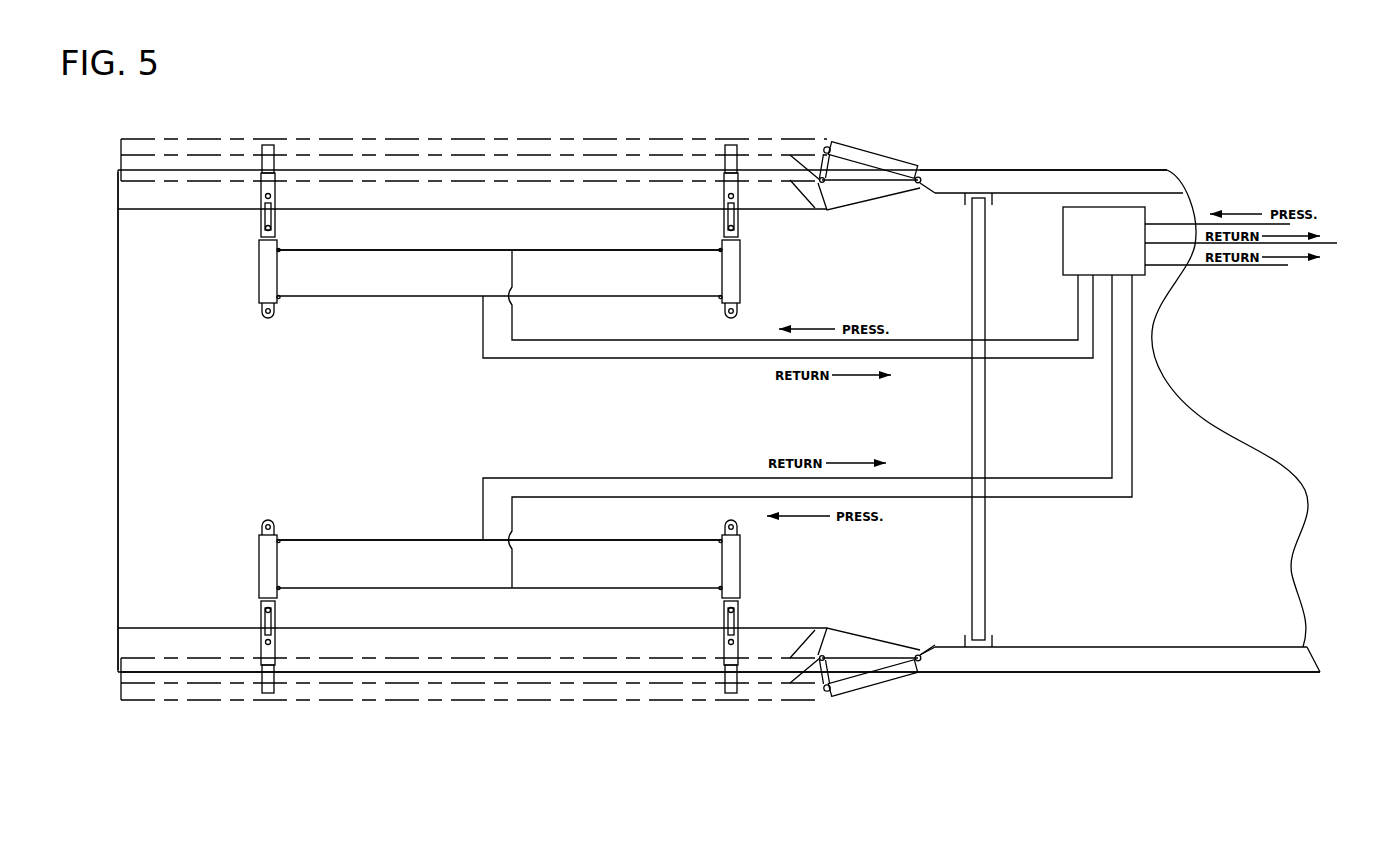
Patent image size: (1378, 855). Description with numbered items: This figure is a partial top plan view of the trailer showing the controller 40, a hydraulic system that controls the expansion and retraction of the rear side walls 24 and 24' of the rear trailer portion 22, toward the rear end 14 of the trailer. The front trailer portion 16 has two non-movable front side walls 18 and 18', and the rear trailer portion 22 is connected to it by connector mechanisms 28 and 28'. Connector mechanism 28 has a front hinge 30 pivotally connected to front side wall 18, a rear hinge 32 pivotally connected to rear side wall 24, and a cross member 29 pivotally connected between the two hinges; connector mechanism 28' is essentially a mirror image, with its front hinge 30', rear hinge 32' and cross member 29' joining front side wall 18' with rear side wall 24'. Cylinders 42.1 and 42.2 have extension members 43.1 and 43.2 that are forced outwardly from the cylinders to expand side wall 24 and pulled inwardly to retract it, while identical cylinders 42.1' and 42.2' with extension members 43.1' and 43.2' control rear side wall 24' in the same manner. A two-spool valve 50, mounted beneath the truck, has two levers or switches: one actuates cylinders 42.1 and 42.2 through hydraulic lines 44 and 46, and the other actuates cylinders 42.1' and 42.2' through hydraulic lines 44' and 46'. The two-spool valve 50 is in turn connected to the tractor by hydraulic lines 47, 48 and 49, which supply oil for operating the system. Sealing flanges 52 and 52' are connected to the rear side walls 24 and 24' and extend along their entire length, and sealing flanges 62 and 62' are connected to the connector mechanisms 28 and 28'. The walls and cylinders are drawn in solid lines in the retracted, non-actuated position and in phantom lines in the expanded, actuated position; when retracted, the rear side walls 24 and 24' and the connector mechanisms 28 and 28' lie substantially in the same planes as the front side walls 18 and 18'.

The rear end 14 is at (104, 228).
The front trailer portion 16 is at (1088, 674).
The front side wall 18 is at (1160, 718).
The front side wall 18' is at (1043, 126).
The rear trailer portion 22 is at (490, 674).
The rear side wall 24 is at (470, 724).
The rear side wall 24' is at (474, 110).
The connector mechanism 28 is at (872, 732).
The connector mechanism 28' is at (872, 107).
The cross member 29 is at (869, 738).
The cross member 29' is at (869, 120).
The front hinge 30 is at (933, 707).
The front hinge 30' is at (934, 141).
The rear hinge 32 is at (810, 723).
The rear hinge 32' is at (805, 110).
The controller 40 is at (212, 376).
The cylinder 42.1 is at (225, 559).
The cylinder 42.2 is at (778, 559).
The cylinder 42.1' is at (214, 279).
The cylinder 42.2' is at (766, 279).
The extension member 43.1 is at (220, 637).
The extension member 43.2 is at (773, 634).
The extension member 43.1' is at (212, 191).
The extension member 43.2' is at (771, 197).
The hydraulic line 44 is at (797, 407).
The hydraulic line 44' is at (788, 342).
The hydraulic line 46 is at (821, 431).
The hydraulic line 46' is at (794, 330).
The hydraulic line 47 is at (1198, 222).
The hydraulic line 48 is at (1257, 246).
The hydraulic line 49 is at (1276, 266).
The two-spool valve 50 is at (1095, 206).
The sealing flange 52 is at (472, 566).
The sealing flange 52' is at (472, 274).
The sealing flange 62 is at (855, 615).
The connector sealing flange 62' is at (869, 216).